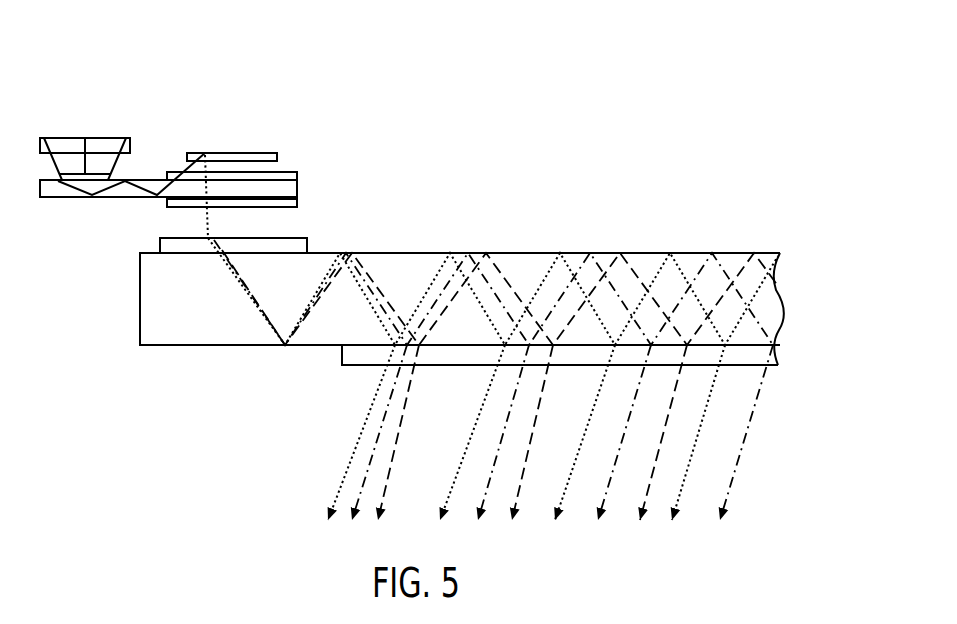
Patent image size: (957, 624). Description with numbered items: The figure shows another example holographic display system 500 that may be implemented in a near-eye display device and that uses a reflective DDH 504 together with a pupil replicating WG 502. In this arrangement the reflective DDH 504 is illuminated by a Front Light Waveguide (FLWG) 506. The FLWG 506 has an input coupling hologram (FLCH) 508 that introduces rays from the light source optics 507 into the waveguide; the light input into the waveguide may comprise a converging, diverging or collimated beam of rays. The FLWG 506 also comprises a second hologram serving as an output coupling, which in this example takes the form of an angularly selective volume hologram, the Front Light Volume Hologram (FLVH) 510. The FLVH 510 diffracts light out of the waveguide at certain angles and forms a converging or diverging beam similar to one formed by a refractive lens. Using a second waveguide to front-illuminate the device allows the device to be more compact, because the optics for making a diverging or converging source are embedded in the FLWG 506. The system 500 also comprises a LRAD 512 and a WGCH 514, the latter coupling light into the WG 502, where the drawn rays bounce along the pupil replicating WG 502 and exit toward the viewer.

The holographic display system 500 is at (713, 59).
The pupil replicating waveguide 502 is at (140, 295).
The reflective DDH 504 is at (277, 152).
The front light waveguide 506 is at (297, 180).
The light source optics 507 is at (131, 140).
The input coupling hologram 508 is at (110, 178).
The front light volume hologram 510 is at (297, 172).
The LRAD 512 is at (297, 200).
The WGCH 514 is at (306, 240).